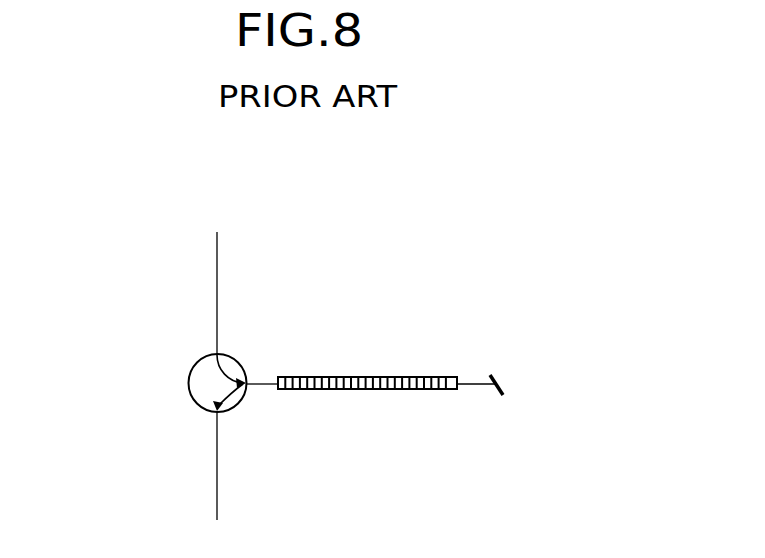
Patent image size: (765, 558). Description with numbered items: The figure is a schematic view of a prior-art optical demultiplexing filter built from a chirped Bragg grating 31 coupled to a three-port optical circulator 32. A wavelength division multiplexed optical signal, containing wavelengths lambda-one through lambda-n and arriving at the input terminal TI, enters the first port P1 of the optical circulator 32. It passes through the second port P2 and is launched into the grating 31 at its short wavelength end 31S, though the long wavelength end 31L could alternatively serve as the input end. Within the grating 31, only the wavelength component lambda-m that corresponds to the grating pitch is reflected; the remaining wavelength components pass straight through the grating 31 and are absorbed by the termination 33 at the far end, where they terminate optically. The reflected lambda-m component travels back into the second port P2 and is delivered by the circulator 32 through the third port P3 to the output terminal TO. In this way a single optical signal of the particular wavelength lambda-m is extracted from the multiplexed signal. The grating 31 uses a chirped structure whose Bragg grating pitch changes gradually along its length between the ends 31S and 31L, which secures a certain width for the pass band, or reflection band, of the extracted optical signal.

The input terminal TI is at (217, 250).
The output terminal TO is at (218, 492).
The three-port optical circulator 32 is at (189, 382).
The first port P1 is at (217, 338).
The second port P2 is at (262, 386).
The third port P3 is at (217, 430).
The chirped Bragg grating 31 is at (372, 377).
The short wavelength end 31S is at (277, 377).
The long wavelength end 31L is at (460, 377).
The termination 33 is at (493, 395).